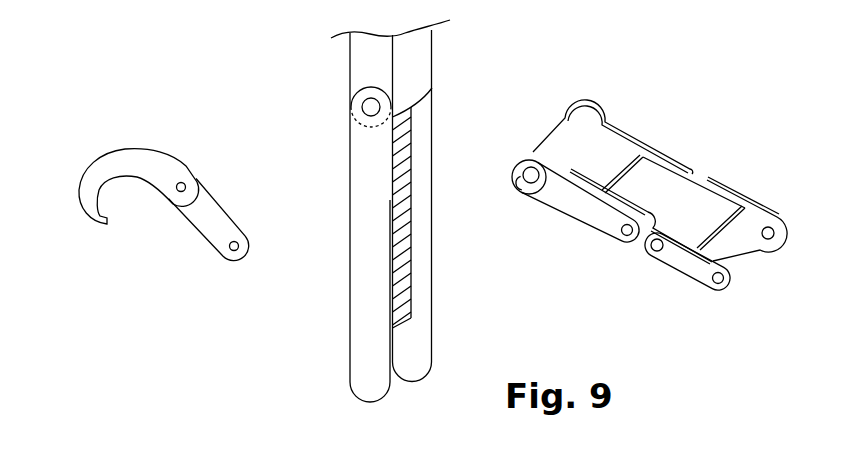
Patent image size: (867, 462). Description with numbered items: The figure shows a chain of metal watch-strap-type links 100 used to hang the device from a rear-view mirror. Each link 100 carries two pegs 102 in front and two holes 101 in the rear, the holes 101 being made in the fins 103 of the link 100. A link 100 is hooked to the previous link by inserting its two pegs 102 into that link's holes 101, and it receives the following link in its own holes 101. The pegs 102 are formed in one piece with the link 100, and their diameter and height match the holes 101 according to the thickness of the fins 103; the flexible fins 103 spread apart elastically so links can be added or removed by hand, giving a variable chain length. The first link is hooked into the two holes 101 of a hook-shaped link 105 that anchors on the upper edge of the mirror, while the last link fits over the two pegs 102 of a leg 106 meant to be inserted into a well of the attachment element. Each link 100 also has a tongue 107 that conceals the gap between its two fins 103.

The link 100 is at (213, 217).
The holes 101 is at (627, 232).
The pegs 102 is at (523, 183).
The fins 103 is at (683, 262).
The hook-shaped link 105 is at (120, 165).
The leg 106 is at (365, 337).
The tongue 107 is at (607, 157).